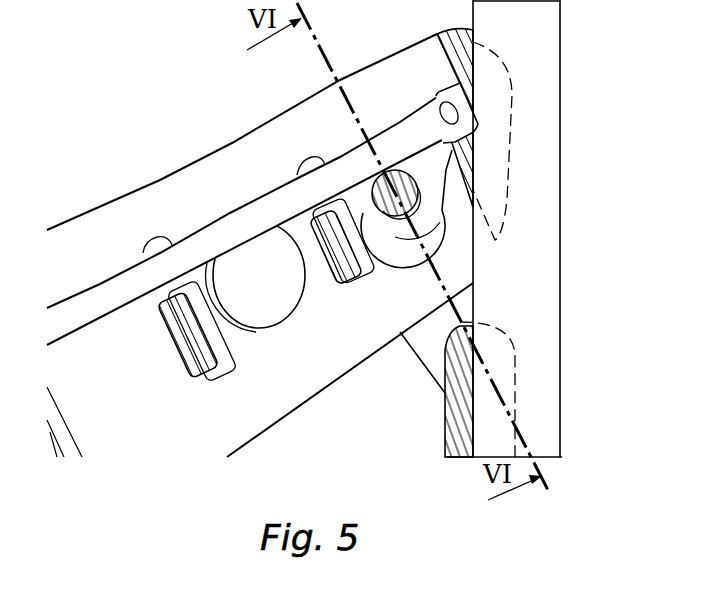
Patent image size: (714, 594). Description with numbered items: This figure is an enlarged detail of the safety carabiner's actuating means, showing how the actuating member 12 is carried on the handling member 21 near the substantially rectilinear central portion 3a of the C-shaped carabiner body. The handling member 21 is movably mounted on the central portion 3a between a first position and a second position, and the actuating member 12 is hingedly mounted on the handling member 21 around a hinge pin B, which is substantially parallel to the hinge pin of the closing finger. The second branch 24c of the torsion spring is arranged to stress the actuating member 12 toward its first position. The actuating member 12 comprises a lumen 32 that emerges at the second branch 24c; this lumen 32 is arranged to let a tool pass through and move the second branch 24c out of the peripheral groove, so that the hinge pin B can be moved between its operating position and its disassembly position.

The actuating member 12 is at (103, 243).
The second branch of the torsion spring 24c is at (217, 240).
The central portion 3a is at (540, 167).
The hinge pin B is at (428, 216).
The lumen 32 is at (276, 282).
The handling member 21 is at (433, 342).